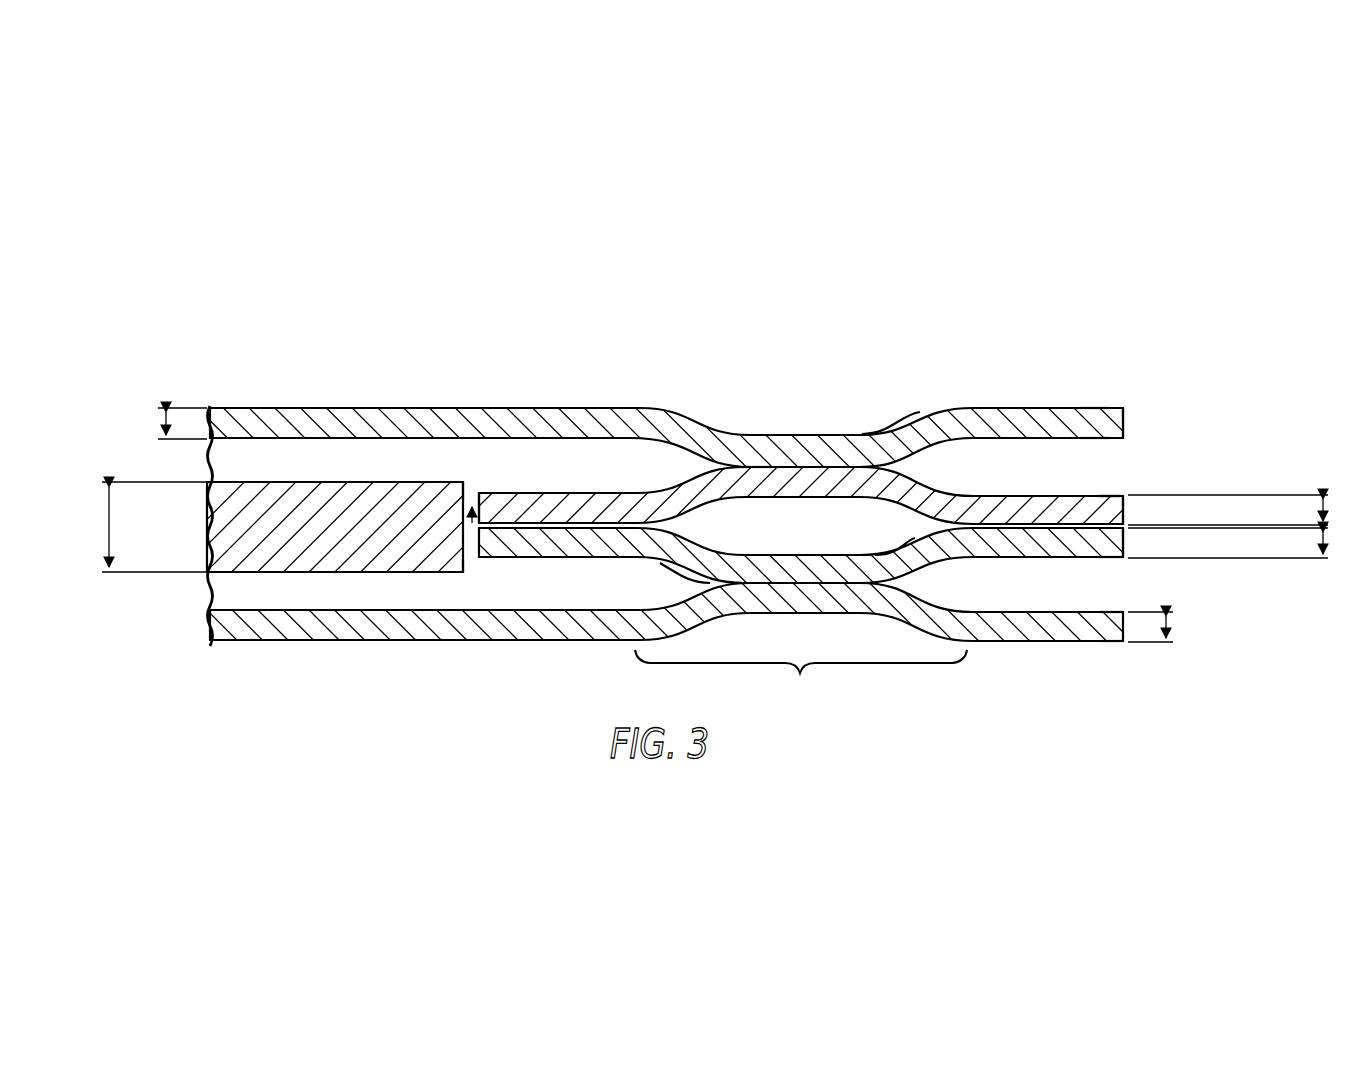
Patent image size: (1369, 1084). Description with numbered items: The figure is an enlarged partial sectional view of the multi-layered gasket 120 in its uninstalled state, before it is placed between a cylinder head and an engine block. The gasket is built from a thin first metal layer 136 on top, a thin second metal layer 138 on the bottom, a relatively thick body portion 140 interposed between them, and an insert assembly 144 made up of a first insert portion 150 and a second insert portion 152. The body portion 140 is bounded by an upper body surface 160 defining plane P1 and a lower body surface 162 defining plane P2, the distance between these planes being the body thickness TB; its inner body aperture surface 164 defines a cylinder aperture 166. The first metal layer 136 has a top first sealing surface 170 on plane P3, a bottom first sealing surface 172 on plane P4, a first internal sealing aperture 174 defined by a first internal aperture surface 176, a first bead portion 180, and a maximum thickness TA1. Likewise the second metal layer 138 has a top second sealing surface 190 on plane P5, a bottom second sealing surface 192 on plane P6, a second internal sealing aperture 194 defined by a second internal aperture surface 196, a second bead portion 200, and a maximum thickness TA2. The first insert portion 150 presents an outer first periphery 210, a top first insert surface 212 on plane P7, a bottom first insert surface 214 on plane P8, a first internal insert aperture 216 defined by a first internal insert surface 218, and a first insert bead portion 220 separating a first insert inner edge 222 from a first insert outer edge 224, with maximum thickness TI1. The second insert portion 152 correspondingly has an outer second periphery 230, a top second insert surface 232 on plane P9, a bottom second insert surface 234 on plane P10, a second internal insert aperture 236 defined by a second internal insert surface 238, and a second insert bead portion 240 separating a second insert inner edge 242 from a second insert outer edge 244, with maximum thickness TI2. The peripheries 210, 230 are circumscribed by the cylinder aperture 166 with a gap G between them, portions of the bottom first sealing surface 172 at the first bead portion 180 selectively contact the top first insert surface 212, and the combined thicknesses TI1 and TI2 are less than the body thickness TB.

The MLS gasket 120 is at (1072, 300).
The first metal layer 136 is at (220, 427).
The second metal layer 138 is at (213, 620).
The body portion 140 is at (213, 527).
The insert assembly 144 is at (1257, 432).
The first insert portion 150 is at (1107, 498).
The second insert portion 152 is at (1104, 548).
The upper body surface 160 is at (362, 480).
The lower body surface 162 is at (348, 574).
The inner body aperture surface 164 is at (473, 575).
The cylinder aperture 166 is at (465, 483).
The top first sealing surface 170 is at (1093, 405).
The bottom first sealing surface 172 is at (1092, 443).
The first internal sealing aperture 174 is at (1128, 413).
The first internal aperture surface 176 is at (1129, 423).
The first bead portion 180 is at (883, 407).
The top second sealing surface 190 is at (433, 609).
The bottom second sealing surface 192 is at (435, 644).
The second internal sealing aperture 194 is at (1136, 635).
The second internal aperture surface 196 is at (1128, 617).
The second bead portion 200 is at (801, 678).
The outer first periphery 210 is at (480, 494).
The top first insert surface 212 is at (598, 487).
The bottom first insert surface 214 is at (802, 500).
The first internal insert aperture 216 is at (1140, 505).
The first internal insert surface 218 is at (1130, 515).
The first insert bead portion 220 is at (745, 463).
The first insert inner edge 222 is at (1105, 496).
The first insert outer edge 224 is at (492, 507).
The outer second periphery 230 is at (550, 643).
The top second insert surface 232 is at (890, 545).
The bottom second insert surface 234 is at (673, 572).
The second internal insert aperture 236 is at (1140, 538).
The second internal insert surface 238 is at (1130, 548).
The second insert bead portion 240 is at (838, 568).
The second insert inner edge 242 is at (1020, 543).
The second insert outer edge 244 is at (538, 543).
The gap G is at (472, 522).
The first metal layer maximum thickness TA1 is at (167, 423).
The second metal layer maximum thickness TA2 is at (1166, 627).
The body thickness TB is at (143, 527).
The first insert layer thickness TI1 is at (1242, 510).
The second insert layer thickness TI2 is at (1242, 543).
The first plane P1 is at (118, 482).
The second plane P2 is at (118, 572).
The plane P3 is at (195, 408).
The plane P4 is at (183, 440).
The plane P5 is at (1260, 495).
The plane P6 is at (1293, 523).
The plane P7 is at (1262, 530).
The plane P8 is at (1303, 558).
The plane P9 is at (1165, 610).
The plane P10 is at (1162, 643).